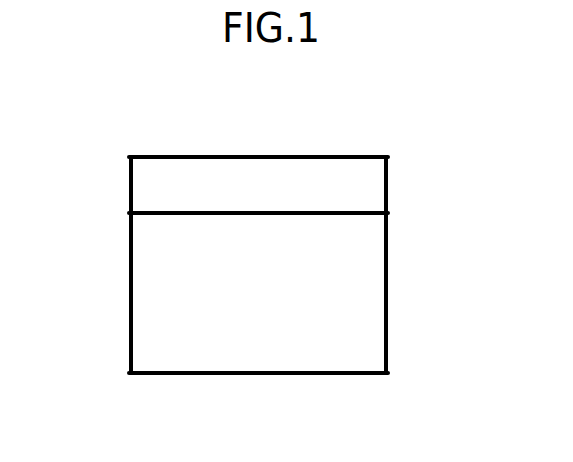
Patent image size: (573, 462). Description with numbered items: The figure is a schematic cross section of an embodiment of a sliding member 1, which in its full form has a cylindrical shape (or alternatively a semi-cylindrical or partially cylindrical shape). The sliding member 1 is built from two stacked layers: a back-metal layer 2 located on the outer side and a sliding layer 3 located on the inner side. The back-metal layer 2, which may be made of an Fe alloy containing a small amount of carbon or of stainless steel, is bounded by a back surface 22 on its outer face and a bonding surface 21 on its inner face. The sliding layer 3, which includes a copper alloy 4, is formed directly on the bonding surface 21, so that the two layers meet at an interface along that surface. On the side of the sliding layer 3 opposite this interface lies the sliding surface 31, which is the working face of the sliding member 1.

The sliding member 1 is at (267, 253).
The back-metal layer 2 is at (297, 316).
The bonding surface 21 is at (360, 215).
The back surface 22 is at (357, 378).
The sliding layer 3 is at (289, 163).
The sliding surface 31 is at (260, 155).
The copper alloy 4 is at (148, 186).